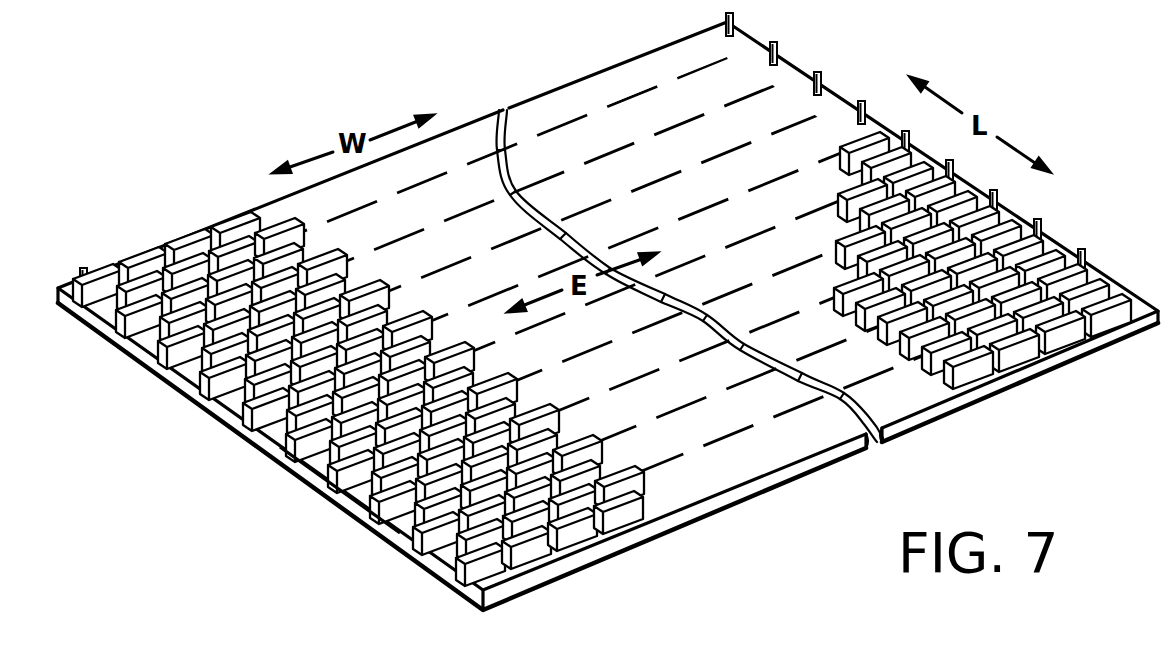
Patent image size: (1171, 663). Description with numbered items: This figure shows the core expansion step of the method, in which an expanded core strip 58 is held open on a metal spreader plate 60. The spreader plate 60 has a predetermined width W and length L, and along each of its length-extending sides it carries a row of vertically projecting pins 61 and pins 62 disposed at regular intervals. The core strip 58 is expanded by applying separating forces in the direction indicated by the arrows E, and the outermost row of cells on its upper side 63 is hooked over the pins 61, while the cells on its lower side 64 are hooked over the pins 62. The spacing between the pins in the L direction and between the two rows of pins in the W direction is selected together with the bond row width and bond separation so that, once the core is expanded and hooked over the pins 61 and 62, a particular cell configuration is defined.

The core strip 58 is at (217, 192).
The spreader plate 60 is at (780, 500).
The pins 61 is at (822, 79).
The pins 62 is at (372, 510).
The upper side 63 is at (1092, 264).
The lower side 64 is at (240, 433).